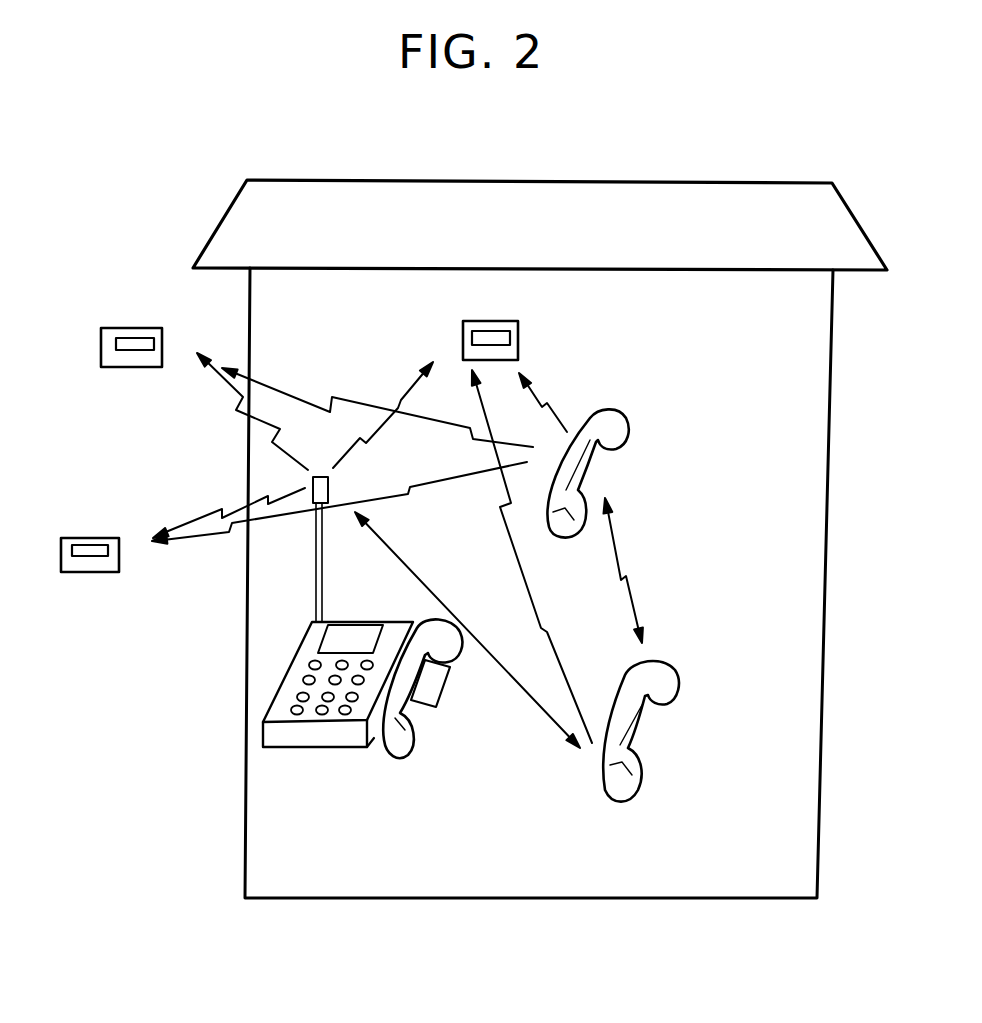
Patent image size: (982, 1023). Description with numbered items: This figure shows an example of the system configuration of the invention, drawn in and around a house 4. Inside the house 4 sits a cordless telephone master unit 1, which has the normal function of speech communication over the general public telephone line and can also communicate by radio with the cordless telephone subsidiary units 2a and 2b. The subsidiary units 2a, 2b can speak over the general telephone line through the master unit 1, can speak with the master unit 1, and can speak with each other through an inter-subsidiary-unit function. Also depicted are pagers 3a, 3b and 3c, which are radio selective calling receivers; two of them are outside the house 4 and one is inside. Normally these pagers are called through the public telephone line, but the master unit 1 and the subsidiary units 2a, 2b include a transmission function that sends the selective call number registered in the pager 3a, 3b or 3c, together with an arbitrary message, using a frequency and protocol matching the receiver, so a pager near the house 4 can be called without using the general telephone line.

The cordless telephone master unit 1 is at (442, 722).
The cordless telephone subsidiary unit 2a is at (627, 430).
The cordless telephone subsidiary unit 2b is at (677, 672).
The pager 3a is at (98, 572).
The pager 3b is at (125, 367).
The pager 3c is at (518, 338).
The house 4 is at (825, 625).